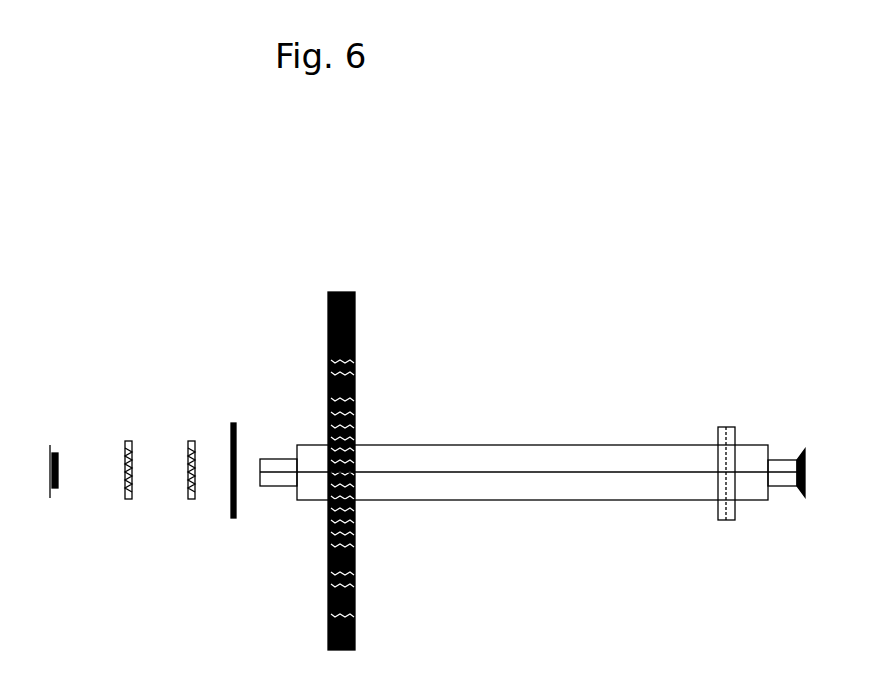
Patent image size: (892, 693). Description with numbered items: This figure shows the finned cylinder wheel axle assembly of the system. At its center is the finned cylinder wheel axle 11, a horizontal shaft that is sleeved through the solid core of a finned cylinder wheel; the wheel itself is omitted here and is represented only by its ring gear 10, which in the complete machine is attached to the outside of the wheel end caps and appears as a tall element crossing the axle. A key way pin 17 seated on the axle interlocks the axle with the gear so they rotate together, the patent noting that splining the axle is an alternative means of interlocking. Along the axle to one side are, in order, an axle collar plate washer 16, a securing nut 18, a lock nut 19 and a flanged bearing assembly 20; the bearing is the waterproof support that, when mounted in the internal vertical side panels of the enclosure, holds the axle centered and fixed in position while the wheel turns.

The ring gear 10 is at (342, 292).
The finned cylinder wheel axle 11 is at (527, 445).
The axle collar plate washer 16 is at (233, 423).
The key way pin 17 is at (727, 427).
The securing nut 18 is at (193, 441).
The lock nut 19 is at (130, 441).
The flanged bearing assembly 20 is at (53, 445).